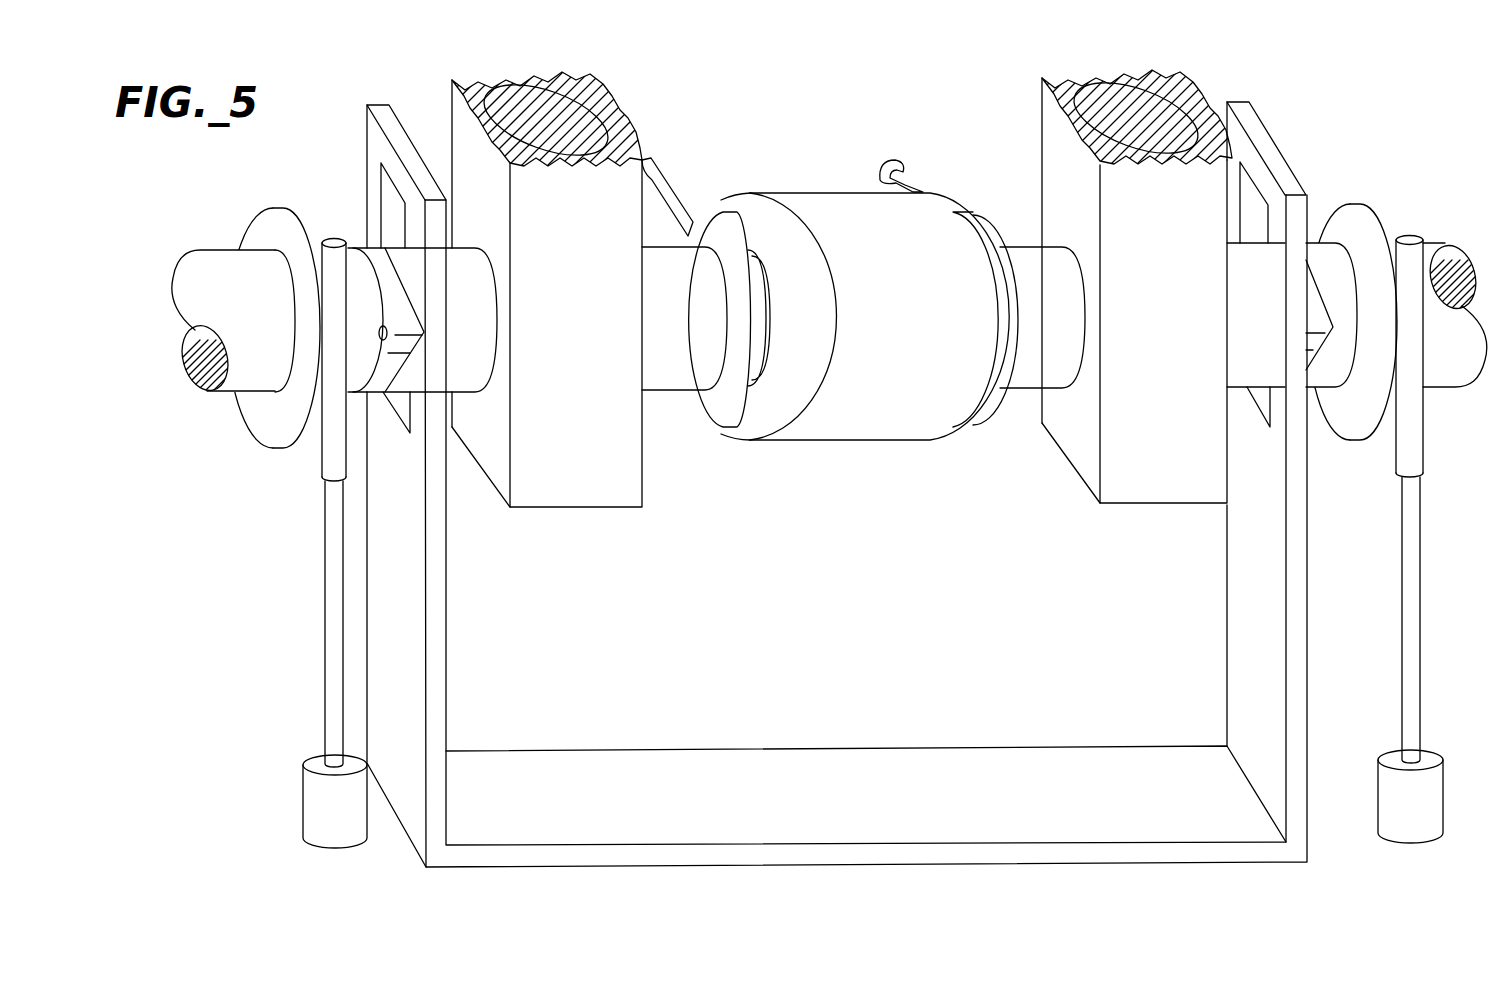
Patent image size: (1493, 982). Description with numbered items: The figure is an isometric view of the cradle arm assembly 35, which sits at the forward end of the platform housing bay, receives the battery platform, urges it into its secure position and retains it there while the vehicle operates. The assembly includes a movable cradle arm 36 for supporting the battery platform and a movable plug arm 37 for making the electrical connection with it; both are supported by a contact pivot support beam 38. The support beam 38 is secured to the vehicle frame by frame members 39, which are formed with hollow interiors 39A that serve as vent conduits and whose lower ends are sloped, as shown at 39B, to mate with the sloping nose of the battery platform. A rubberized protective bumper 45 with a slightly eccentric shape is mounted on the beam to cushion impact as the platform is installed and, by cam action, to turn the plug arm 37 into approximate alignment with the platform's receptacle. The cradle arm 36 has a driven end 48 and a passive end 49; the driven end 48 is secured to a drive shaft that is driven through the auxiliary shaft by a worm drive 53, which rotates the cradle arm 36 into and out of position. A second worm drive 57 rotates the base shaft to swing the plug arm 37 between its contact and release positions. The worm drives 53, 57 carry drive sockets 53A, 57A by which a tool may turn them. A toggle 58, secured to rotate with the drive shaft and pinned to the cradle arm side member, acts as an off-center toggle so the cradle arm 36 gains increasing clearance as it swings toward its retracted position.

The cradle arm assembly 35 is at (434, 74).
The cradle arm 36 is at (545, 760).
The plug arm 37 is at (657, 165).
The contact pivot support beam 38 is at (229, 249).
The frame members 39 is at (624, 140).
The hollow interior 39A is at (575, 99).
The sloped lower end 39B is at (473, 467).
The protective bumper 45 is at (878, 434).
The driven end 48 is at (372, 106).
The passive end 49 is at (1270, 145).
The worm drive 53 is at (263, 405).
The drive socket 53A is at (303, 810).
The second worm drive 57 is at (1428, 245).
The drive socket 57A is at (1378, 792).
The toggle 58 is at (380, 322).